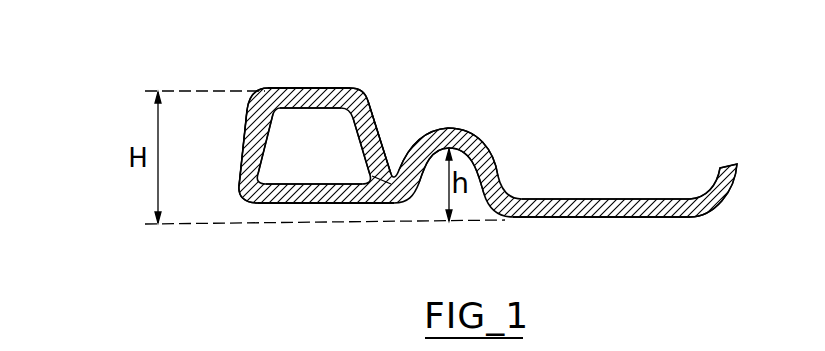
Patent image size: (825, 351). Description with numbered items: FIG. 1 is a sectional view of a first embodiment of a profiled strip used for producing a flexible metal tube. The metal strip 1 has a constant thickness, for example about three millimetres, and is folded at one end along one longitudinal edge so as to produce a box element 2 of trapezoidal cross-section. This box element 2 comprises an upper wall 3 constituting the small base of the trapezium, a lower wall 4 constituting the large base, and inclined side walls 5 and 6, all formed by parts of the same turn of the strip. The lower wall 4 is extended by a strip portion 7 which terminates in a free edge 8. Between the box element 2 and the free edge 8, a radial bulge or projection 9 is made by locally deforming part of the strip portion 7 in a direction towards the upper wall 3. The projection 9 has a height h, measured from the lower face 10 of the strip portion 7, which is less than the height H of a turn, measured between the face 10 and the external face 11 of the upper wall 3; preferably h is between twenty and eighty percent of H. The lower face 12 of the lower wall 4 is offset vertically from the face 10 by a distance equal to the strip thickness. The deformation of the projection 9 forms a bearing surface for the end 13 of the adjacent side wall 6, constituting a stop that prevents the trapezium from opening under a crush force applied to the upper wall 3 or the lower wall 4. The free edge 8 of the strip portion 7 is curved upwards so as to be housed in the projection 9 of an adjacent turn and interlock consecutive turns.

The metal strip 1 is at (573, 185).
The box element 2 is at (370, 84).
The upper wall 3 is at (316, 89).
The lower wall 4 is at (310, 203).
The inclined side wall 5 is at (248, 160).
The inclined side wall 6 is at (374, 128).
The strip portion 7 is at (583, 206).
The free edge 8 is at (731, 172).
The radial bulge or projection 9 is at (490, 125).
The lower face of the strip portion 10 is at (642, 217).
The external face of the upper wall 11 is at (280, 88).
The lower face of the lower wall 12 is at (340, 205).
The end of the side wall 13 is at (368, 180).